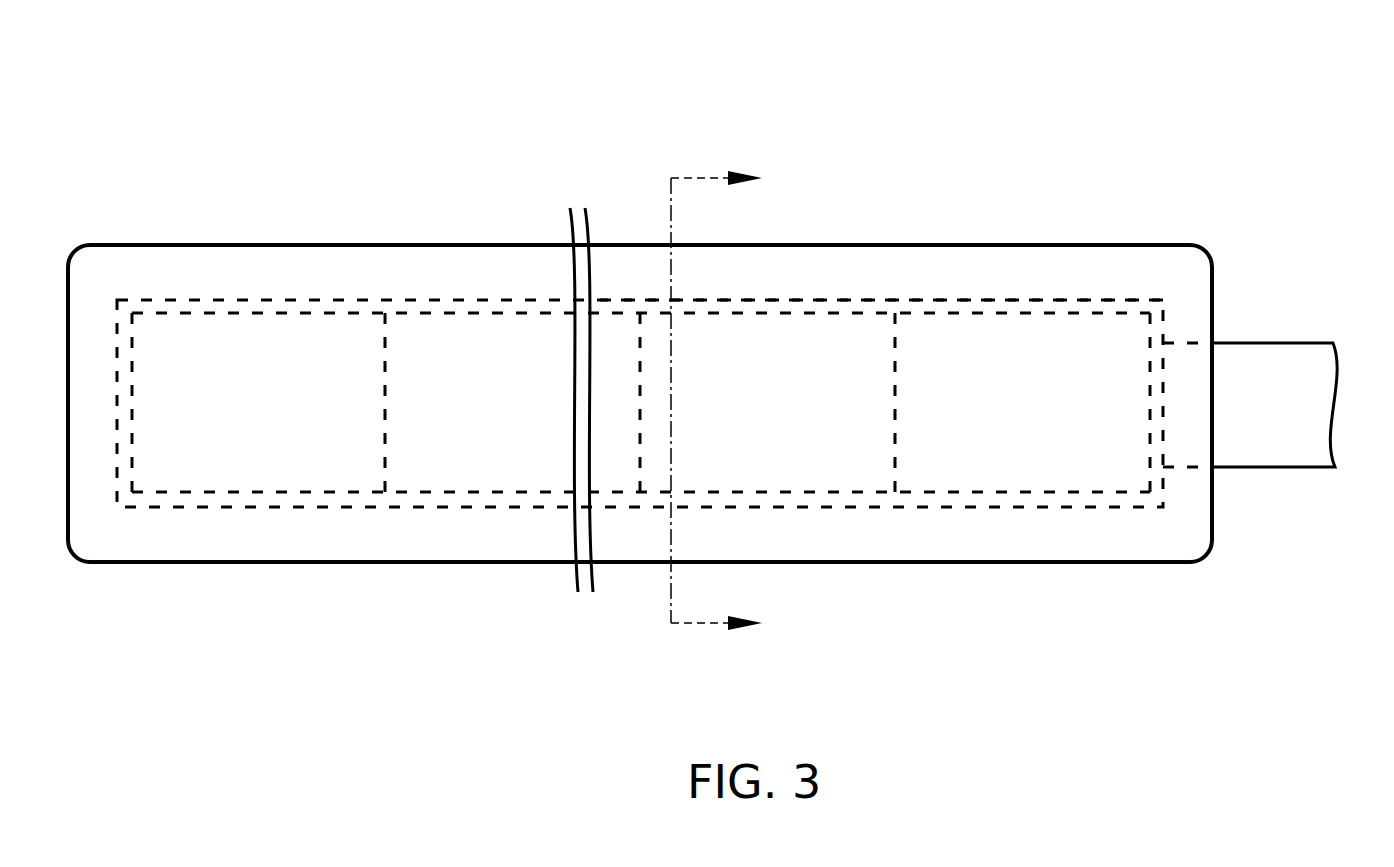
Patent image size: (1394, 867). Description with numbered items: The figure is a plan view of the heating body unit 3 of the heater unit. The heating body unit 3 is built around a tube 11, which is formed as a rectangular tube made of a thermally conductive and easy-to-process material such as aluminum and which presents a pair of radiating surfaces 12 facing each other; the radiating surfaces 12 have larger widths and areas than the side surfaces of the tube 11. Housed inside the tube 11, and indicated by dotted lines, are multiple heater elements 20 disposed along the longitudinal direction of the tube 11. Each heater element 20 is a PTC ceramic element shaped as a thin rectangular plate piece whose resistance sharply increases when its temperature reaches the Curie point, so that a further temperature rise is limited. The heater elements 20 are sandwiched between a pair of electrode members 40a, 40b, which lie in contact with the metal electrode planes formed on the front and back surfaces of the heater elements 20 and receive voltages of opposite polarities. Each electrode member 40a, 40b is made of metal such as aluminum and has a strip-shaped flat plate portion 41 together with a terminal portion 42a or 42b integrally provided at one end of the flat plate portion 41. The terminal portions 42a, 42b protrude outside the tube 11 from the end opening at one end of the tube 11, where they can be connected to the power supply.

The heating body unit 3 is at (1123, 124).
The tube 11 is at (1010, 545).
The radiating surface 12 is at (537, 430).
The heater element 20 is at (255, 312).
The electrode member 40a is at (640, 315).
The electrode member 40b is at (378, 298).
The flat plate portion 41 is at (970, 300).
The terminal portion 42a is at (1264, 354).
The terminal portion 42b is at (1295, 360).